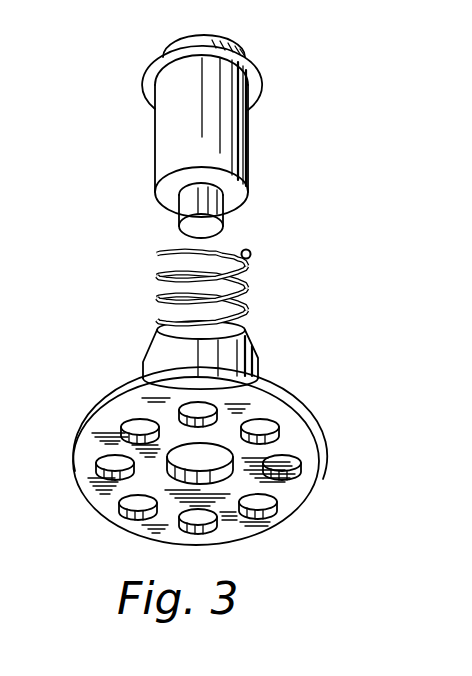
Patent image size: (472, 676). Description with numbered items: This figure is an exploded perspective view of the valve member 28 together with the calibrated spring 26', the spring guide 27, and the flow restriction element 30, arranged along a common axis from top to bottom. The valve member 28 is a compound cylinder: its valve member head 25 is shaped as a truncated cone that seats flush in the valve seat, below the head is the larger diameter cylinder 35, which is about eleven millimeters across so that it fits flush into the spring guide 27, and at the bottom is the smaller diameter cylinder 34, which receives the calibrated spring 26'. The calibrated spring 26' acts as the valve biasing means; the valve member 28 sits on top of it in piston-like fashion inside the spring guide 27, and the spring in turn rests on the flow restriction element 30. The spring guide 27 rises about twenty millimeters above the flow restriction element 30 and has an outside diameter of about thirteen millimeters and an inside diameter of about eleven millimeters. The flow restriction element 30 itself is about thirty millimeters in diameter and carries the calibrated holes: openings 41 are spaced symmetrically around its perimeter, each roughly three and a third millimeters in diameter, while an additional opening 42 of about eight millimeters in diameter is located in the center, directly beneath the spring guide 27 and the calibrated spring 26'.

The valve member 28 is at (128, 136).
The valve member head 25 is at (242, 52).
The larger diameter cylinder 35 is at (248, 147).
The smaller diameter cylinder 34 is at (220, 217).
The calibrated spring 26' is at (250, 287).
The spring guide 27 is at (260, 358).
The flow restriction element 30 is at (84, 469).
The openings 41 is at (300, 465).
The additional opening 42 is at (263, 480).